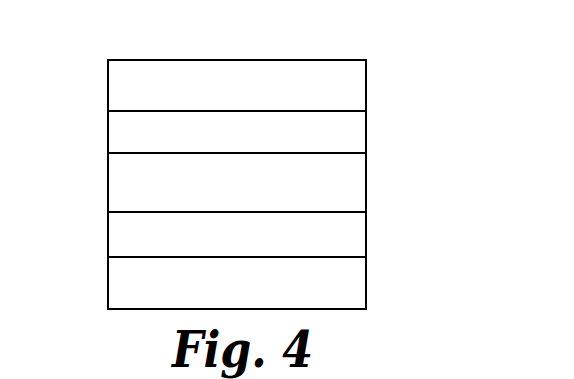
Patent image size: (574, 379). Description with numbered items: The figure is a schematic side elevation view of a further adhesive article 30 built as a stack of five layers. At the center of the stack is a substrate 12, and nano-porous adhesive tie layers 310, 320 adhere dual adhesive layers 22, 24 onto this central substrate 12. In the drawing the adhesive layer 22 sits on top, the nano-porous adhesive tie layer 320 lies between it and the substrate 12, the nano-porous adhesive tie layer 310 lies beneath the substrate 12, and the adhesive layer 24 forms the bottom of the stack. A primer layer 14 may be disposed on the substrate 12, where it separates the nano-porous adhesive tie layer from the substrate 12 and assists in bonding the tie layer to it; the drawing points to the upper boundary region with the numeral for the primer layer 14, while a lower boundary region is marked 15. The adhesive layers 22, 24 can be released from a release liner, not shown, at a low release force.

The adhesive article 30 is at (444, 95).
The adhesive layer 22 is at (217, 98).
The nano-porous adhesive tie layer 320 is at (260, 143).
The primer layer 14 is at (125, 153).
The substrate 12 is at (218, 193).
The nano-porous adhesive tie layer 310 is at (260, 247).
The second interface / boundary 15 is at (343, 213).
The adhesive layer 24 is at (218, 292).